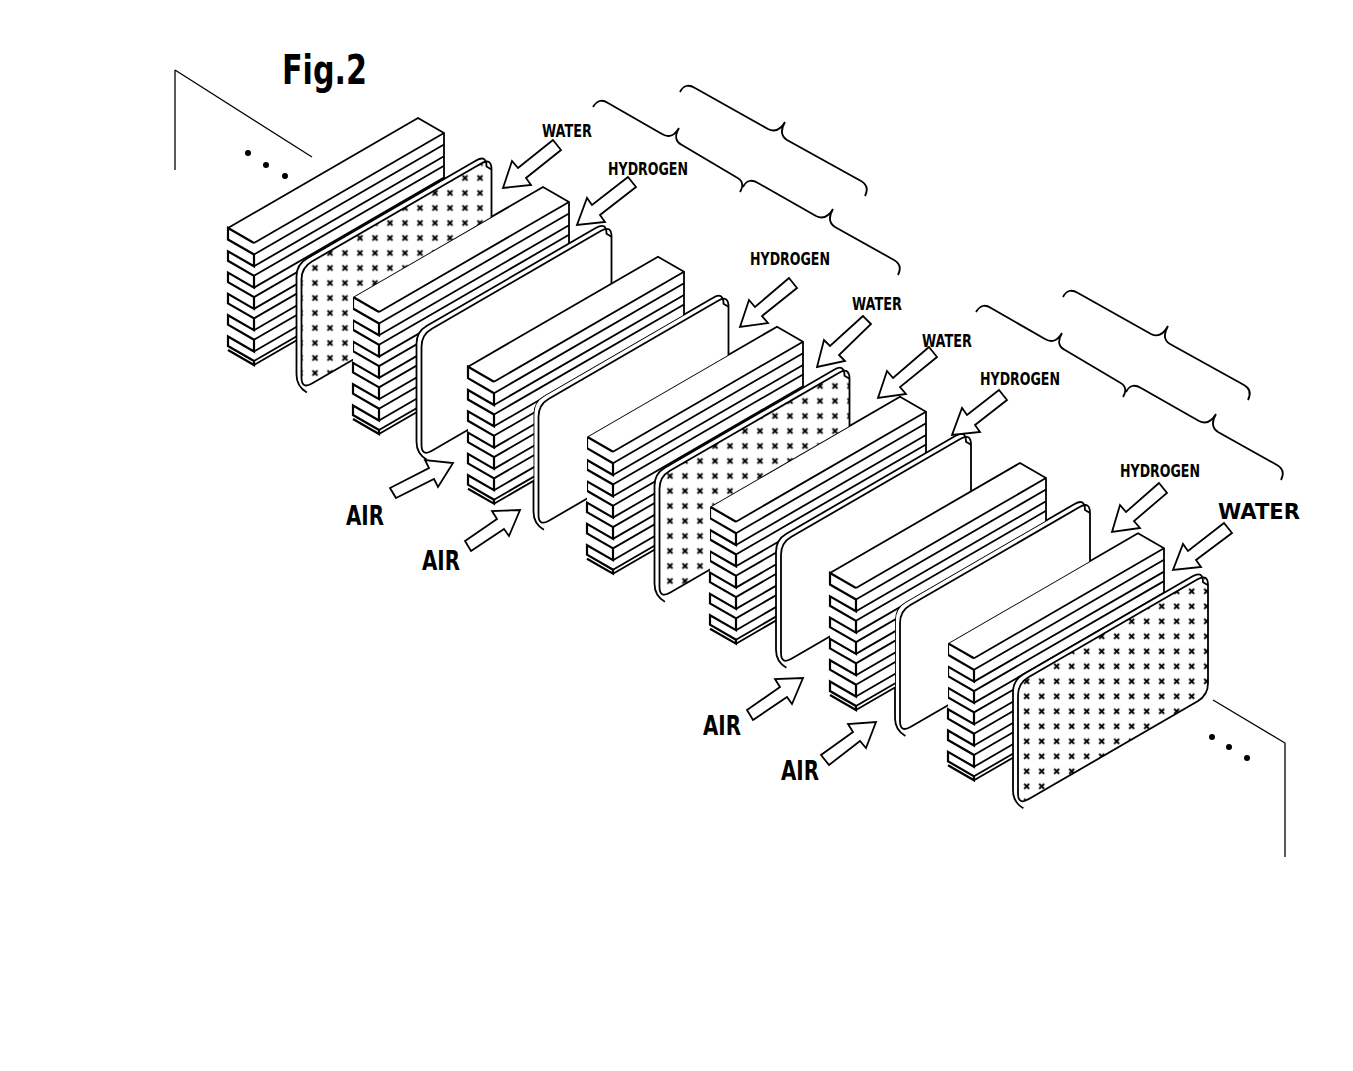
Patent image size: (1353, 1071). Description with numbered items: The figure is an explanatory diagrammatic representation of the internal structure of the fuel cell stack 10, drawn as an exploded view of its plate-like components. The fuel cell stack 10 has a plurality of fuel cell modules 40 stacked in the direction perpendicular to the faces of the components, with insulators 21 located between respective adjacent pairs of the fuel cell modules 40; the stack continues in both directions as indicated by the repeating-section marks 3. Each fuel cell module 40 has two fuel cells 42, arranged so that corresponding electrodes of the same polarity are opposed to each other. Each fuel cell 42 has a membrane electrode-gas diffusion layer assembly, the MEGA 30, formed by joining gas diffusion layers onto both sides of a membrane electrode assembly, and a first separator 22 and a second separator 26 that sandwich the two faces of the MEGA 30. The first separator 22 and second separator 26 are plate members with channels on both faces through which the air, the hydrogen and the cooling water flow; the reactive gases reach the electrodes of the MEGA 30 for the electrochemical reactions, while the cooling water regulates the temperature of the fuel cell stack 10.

The section line / repeating stack indicator 3 is at (198, 165).
The fuel cell stack 10 is at (976, 183).
The insulator 21 is at (493, 205).
The first separator 22 is at (677, 265).
The second separator 26 is at (445, 140).
The membrane electrode-gas diffusion layer assembly (MEGA) 30 is at (611, 241).
The fuel cell module 40 is at (965, 243).
The fuel cell 42 is at (938, 289).